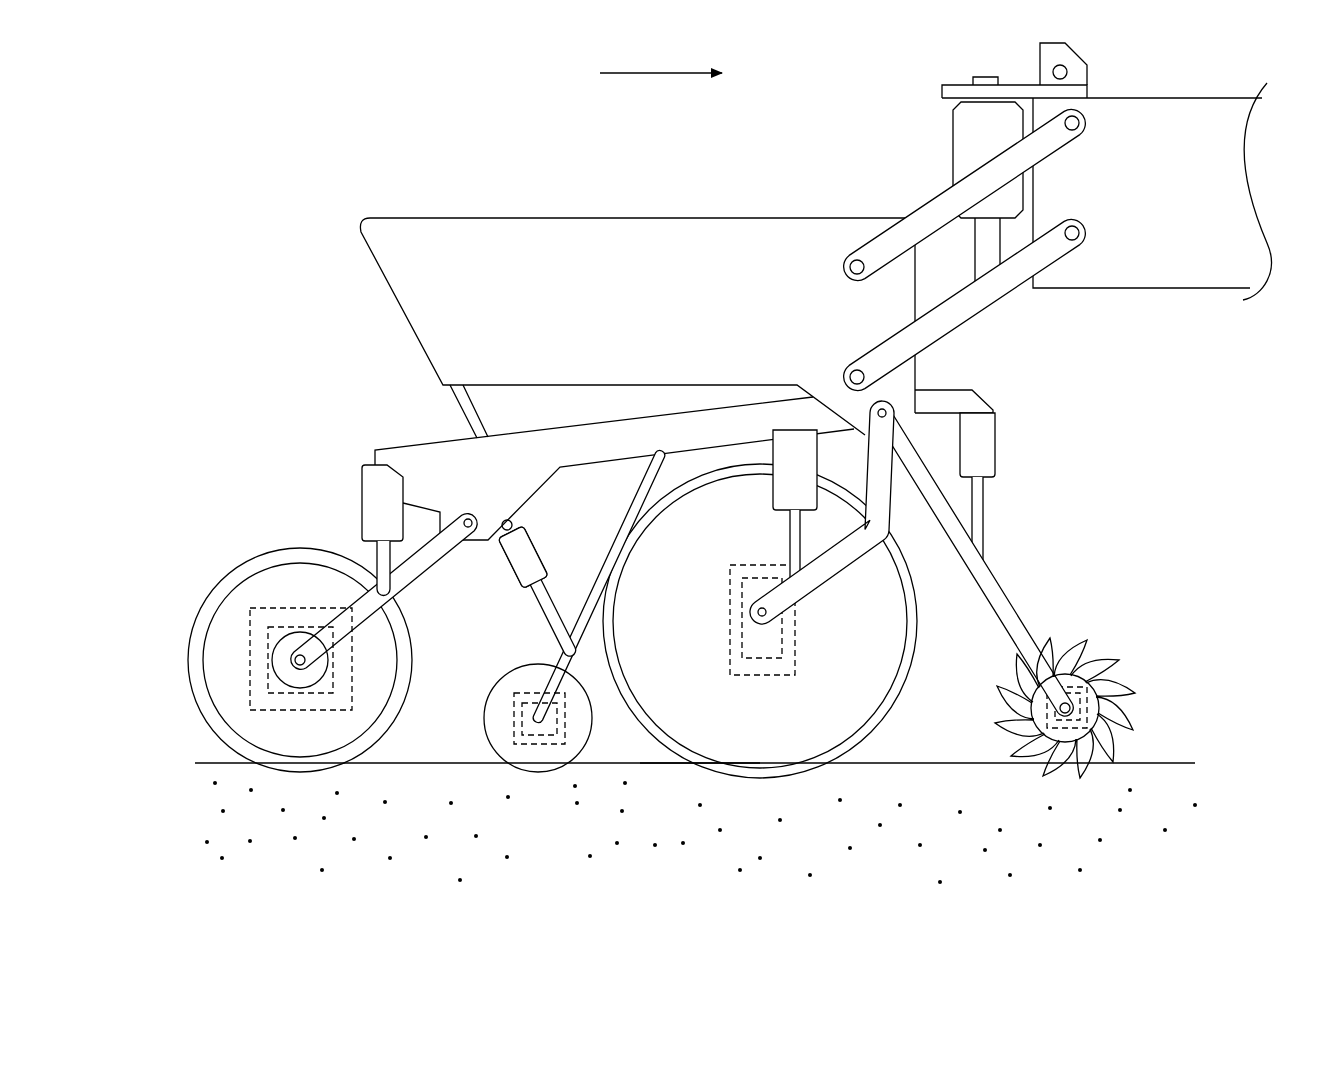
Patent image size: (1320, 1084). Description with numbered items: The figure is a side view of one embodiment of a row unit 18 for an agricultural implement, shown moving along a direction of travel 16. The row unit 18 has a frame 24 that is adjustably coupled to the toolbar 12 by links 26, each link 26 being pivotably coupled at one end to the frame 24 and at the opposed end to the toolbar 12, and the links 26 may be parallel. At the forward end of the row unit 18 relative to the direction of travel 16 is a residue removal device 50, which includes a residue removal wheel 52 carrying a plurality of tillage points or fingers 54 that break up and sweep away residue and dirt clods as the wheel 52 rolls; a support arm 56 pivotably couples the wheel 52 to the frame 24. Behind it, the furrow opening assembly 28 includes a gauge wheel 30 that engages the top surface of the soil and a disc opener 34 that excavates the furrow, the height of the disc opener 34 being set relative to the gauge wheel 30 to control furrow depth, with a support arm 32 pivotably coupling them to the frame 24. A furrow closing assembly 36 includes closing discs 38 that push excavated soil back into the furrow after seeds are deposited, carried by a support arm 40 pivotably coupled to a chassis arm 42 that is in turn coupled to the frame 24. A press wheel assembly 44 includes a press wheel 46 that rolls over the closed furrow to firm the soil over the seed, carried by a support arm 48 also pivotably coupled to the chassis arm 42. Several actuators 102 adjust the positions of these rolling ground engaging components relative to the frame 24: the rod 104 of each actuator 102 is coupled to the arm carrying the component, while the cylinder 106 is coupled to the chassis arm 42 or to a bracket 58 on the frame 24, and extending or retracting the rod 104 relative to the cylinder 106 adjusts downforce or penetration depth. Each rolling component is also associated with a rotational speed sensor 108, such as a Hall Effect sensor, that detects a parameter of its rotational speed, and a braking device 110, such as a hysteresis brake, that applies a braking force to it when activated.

The toolbar 12 is at (1185, 290).
The direction of travel 16 is at (660, 73).
The row unit 18 is at (390, 122).
The frame 24 is at (642, 218).
The links 26 is at (1057, 218).
The furrow opening assembly 28 is at (787, 621).
The gauge wheel 30 is at (917, 578).
The support arm 32 is at (806, 609).
The disc opener 34 is at (692, 772).
The furrow closing assembly 36 is at (496, 658).
The closing discs 38 is at (488, 734).
The support arm 40 is at (662, 476).
The chassis arm 42 is at (410, 447).
The press wheel assembly 44 is at (306, 622).
The press wheel 46 is at (190, 665).
The support arm 48 is at (422, 575).
The residue removal device 50 is at (1029, 591).
The residue removal wheel 52 is at (1097, 715).
The tillage points or fingers 54 is at (1115, 665).
The support arm 56 is at (1005, 612).
The bracket 58 is at (958, 390).
The actuator 102 is at (691, 527).
The rod 104 is at (375, 555).
The cylinder 106 is at (360, 502).
The rotational speed sensor 108 is at (265, 640).
The braking device 110 is at (252, 698).